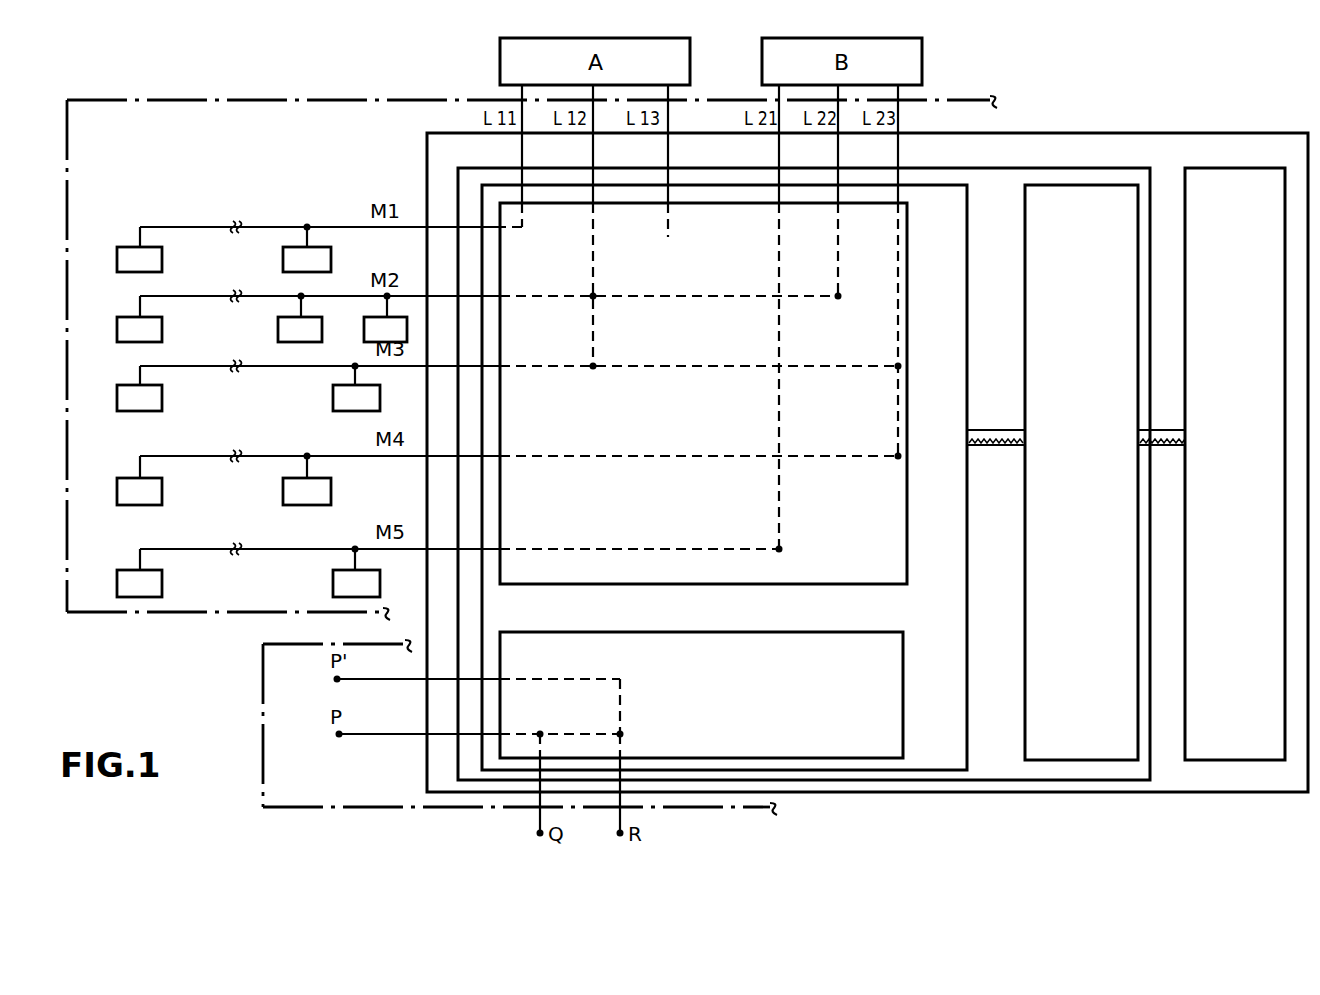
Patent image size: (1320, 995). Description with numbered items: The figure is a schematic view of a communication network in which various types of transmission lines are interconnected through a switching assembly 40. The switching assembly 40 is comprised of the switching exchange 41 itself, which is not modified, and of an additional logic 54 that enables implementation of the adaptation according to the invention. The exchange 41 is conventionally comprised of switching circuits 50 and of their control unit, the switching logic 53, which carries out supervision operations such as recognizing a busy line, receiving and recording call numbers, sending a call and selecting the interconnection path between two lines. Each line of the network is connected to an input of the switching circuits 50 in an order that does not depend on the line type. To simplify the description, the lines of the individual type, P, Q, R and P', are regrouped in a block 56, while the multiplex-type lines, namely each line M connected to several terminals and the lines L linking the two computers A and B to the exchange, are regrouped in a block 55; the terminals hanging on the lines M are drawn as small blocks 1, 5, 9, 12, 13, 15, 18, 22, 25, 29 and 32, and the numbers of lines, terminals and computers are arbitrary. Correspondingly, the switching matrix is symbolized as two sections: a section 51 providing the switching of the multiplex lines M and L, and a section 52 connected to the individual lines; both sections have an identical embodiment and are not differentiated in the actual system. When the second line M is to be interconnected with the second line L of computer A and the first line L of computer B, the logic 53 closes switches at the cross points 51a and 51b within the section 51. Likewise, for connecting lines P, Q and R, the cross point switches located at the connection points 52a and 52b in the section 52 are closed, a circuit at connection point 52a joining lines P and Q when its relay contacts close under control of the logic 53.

The sensor contact 1 is at (139, 259).
The sensor contact 5 is at (307, 248).
The sensor contact 9 is at (139, 329).
The sensor contact 12 is at (300, 318).
The sensor contact 13 is at (385, 318).
The sensor contact 15 is at (139, 398).
The sensor contact 18 is at (356, 387).
The sensor contact 22 is at (139, 491).
The sensor contact 25 is at (307, 479).
The sensor contact 29 is at (139, 583).
The sensor contact 32 is at (356, 572).
The switching assembly 40 is at (461, 166).
The switching exchange 41 is at (1008, 235).
The switching circuits 50 is at (950, 235).
The switching matrix section for multiplex lines 51 is at (880, 226).
The cross point 51a is at (597, 331).
The cross point 51b is at (785, 311).
The switching matrix section for individual lines 52 is at (882, 654).
The connection point 52a is at (543, 721).
The connection point 52b is at (641, 721).
The switching logic 53 is at (1095, 235).
The additional logic 54 is at (1245, 235).
The multiplex line group 55 is at (106, 157).
The individual line group 56 is at (297, 676).